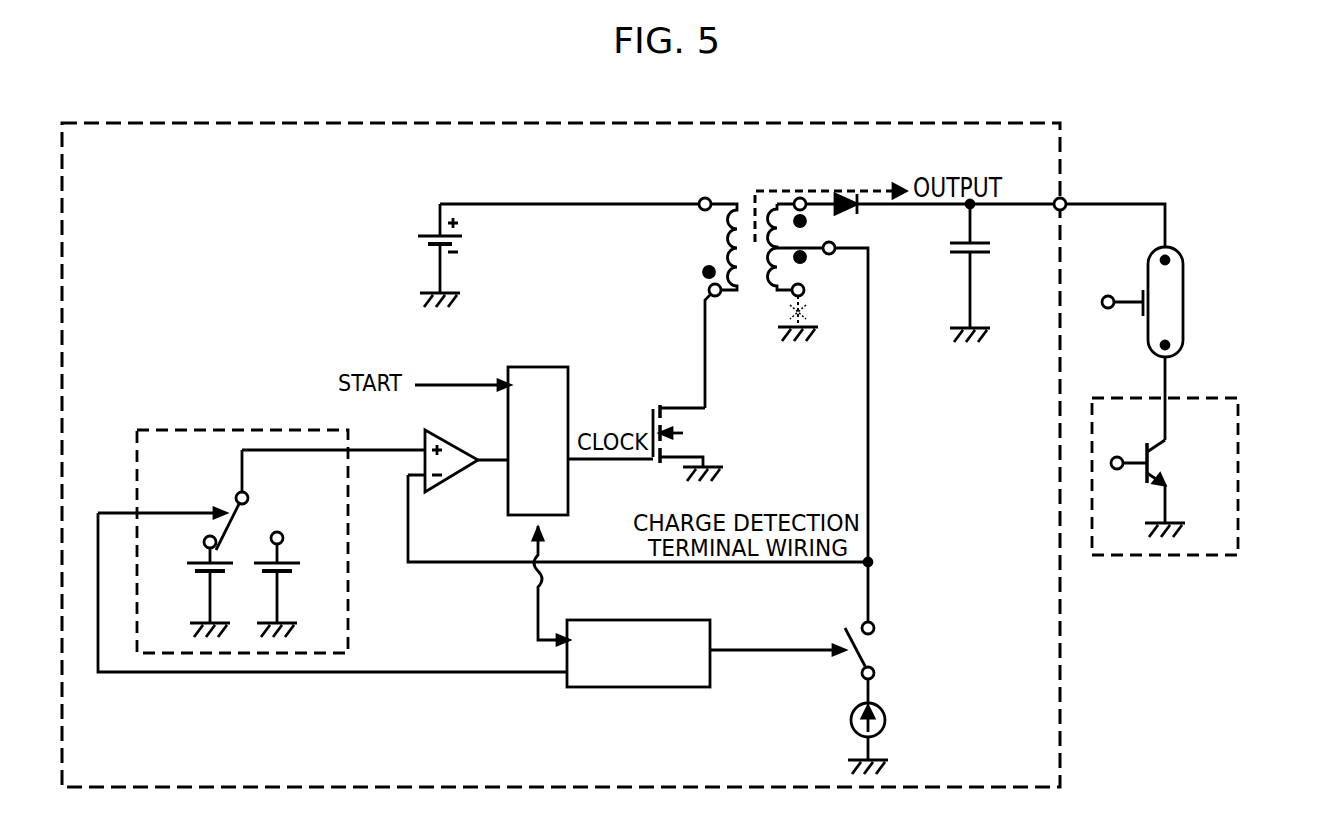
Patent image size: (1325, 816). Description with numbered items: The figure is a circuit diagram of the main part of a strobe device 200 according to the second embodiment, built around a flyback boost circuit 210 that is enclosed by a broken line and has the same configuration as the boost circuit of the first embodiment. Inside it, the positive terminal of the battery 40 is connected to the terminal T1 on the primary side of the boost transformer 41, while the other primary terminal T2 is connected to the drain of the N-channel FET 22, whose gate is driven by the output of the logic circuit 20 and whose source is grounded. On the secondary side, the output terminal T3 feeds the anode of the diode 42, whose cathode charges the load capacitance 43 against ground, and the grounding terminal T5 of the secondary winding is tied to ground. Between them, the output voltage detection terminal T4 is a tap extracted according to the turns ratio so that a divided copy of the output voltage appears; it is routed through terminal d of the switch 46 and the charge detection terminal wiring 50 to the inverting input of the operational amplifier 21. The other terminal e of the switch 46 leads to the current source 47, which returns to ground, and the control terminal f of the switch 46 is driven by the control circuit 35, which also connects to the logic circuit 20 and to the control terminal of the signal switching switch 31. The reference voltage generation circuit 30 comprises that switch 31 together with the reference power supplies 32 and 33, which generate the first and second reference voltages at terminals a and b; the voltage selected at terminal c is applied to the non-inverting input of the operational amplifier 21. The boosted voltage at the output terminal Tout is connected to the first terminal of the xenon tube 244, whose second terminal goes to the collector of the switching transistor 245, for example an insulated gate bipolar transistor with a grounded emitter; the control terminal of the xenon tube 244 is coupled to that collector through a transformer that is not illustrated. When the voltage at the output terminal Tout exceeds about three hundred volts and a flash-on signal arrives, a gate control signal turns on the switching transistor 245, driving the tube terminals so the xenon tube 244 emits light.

The logic circuit 20 is at (541, 363).
The operational amplifier 21 is at (452, 480).
The N-channel FET 22 is at (697, 433).
The reference voltage generation circuit 30 is at (242, 512).
The signal switching switch SW31 31 is at (242, 526).
The reference power supply 32 is at (194, 558).
The reference power supply 33 is at (292, 560).
The control circuit 35 is at (640, 689).
The battery VBAT 40 is at (465, 228).
The boost transformer 41 is at (793, 185).
The diode 42 is at (846, 195).
The load capacitance 43 is at (985, 242).
The switch SW46 46 is at (872, 657).
The current source 47 is at (884, 710).
The charge detection terminal wiring 50 is at (868, 432).
The strobe device 200 is at (1172, 115).
The flyback boost circuit 210 is at (1062, 636).
The xenon tube 244 is at (1185, 306).
The switching transistor SWTr 245 is at (1240, 464).
The terminal T1 is at (703, 197).
The terminal T2 is at (716, 298).
The output terminal T3 is at (798, 197).
The output voltage detection terminal T4 is at (836, 245).
The grounding terminal T5 is at (804, 293).
The output terminal Tout is at (1080, 191).